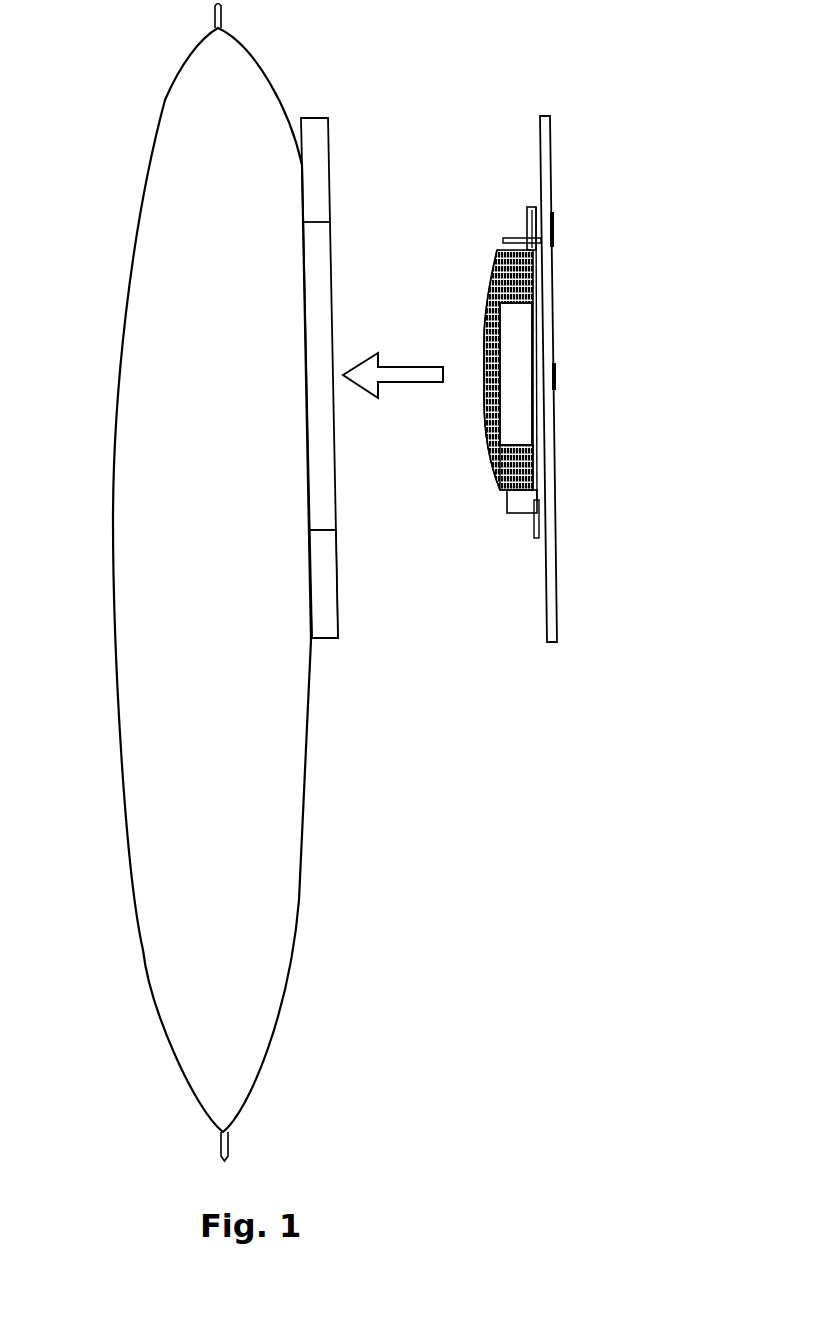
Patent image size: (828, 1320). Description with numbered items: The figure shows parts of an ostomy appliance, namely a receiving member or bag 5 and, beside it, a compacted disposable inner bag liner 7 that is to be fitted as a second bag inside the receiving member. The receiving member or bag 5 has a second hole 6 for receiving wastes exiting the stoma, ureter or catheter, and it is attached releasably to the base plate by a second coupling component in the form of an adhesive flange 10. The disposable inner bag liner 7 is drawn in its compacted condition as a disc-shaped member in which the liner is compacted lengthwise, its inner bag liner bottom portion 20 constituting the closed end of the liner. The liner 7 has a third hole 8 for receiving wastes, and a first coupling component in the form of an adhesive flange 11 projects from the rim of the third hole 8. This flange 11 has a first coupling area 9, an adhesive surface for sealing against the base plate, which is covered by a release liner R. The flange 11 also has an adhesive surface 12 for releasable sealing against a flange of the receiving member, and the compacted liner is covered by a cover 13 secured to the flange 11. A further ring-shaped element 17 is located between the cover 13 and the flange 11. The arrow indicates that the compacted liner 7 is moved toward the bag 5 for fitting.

The receiving member or bag 5 is at (257, 66).
The adhesive flange 10 is at (315, 146).
The second hole 6 is at (333, 525).
The release liner R is at (557, 570).
The further ring-shaped element 17 is at (512, 247).
The inner bag liner bottom portion 20 is at (500, 375).
The third hole 8 is at (525, 425).
The adhesive flange 11 is at (527, 218).
The first coupling area 9 is at (540, 214).
The disposable inner bag liner 7 is at (500, 490).
The adhesive surface 12 is at (531, 525).
The cover 13 is at (483, 420).